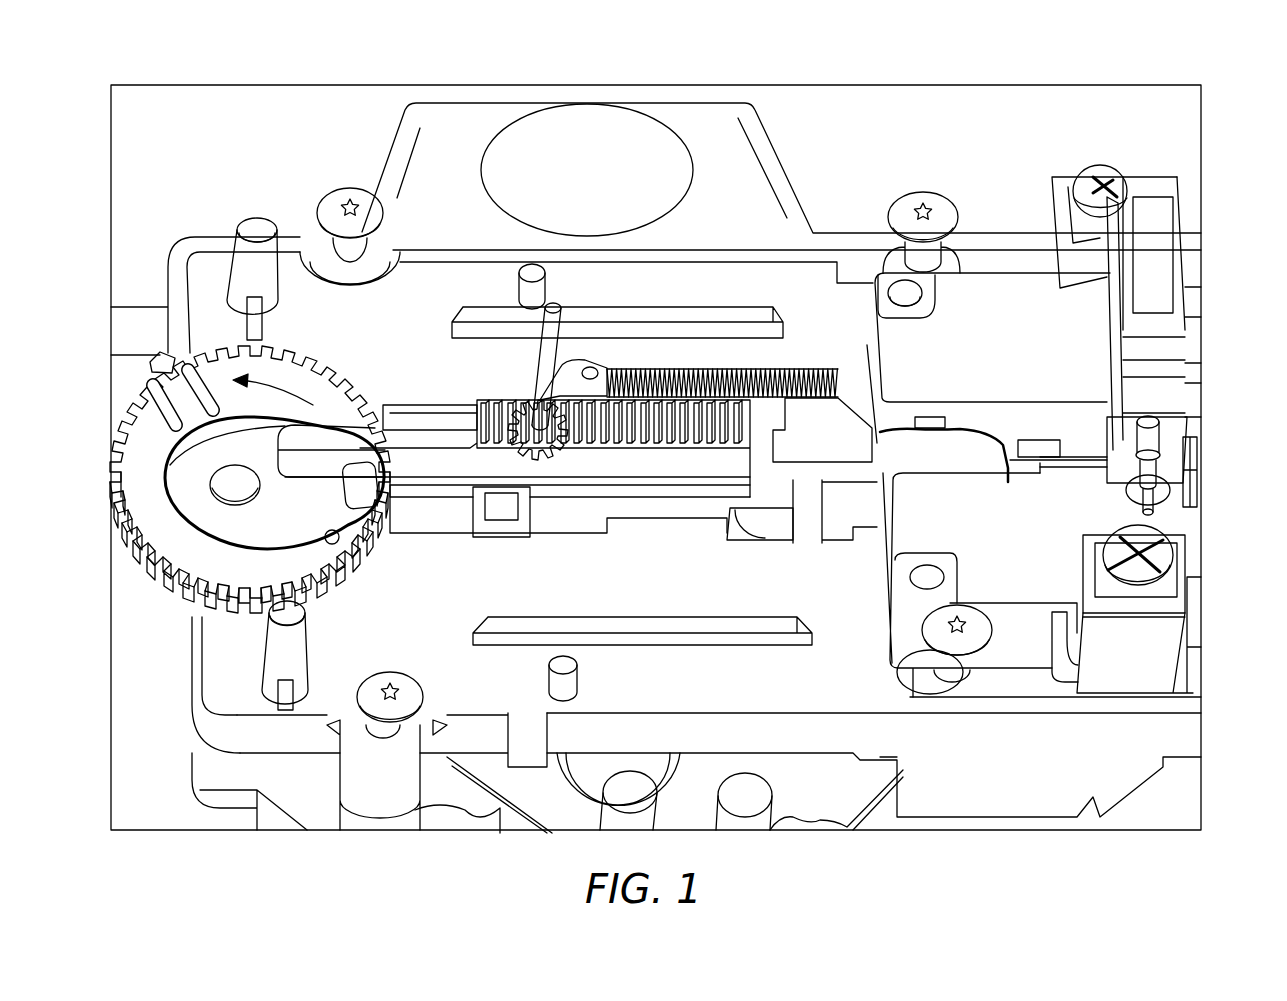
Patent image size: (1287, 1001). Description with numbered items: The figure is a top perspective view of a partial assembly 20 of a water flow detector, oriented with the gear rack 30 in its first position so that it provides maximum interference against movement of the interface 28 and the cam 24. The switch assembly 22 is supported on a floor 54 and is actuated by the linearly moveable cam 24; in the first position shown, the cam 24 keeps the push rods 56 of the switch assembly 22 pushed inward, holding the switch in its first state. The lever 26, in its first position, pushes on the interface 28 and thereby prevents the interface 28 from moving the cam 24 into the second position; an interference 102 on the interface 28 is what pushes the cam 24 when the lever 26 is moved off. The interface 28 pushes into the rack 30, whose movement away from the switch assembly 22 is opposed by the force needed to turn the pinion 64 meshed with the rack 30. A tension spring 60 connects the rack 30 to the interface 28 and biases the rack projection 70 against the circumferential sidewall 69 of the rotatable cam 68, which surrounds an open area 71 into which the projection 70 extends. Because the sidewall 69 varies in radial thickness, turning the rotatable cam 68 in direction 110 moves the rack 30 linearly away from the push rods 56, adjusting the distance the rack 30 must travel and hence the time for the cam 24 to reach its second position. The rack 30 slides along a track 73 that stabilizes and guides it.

The water flow detector assembly 20 is at (1226, 86).
The switch assembly 22 is at (1000, 257).
The cam 24 is at (895, 430).
The lever 26 is at (761, 522).
The interface 28 is at (812, 500).
The gear rack 30 is at (637, 467).
The floor 54 is at (307, 310).
The push rods 56 is at (935, 418).
The spring 60 is at (792, 370).
The pinion 64 is at (528, 413).
The rotatable cam 68 is at (263, 372).
The cam sidewall 69 is at (340, 540).
The rack projection 70 is at (383, 500).
The open area 71 is at (262, 513).
The track 73 is at (592, 490).
The interference 102 is at (1050, 462).
The direction 110 is at (307, 407).